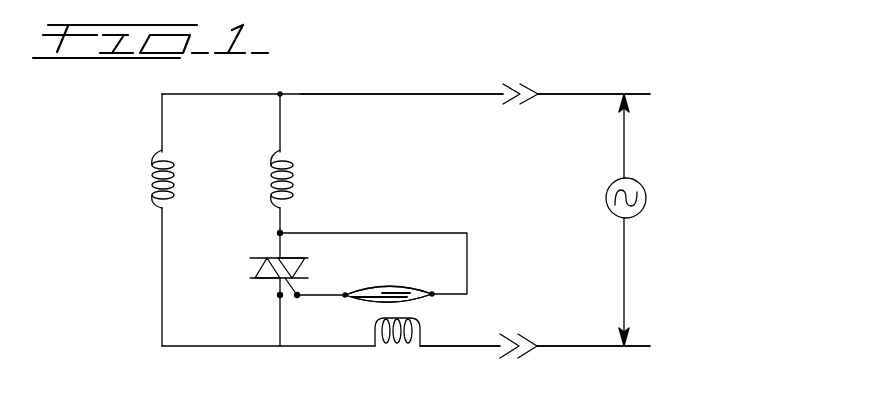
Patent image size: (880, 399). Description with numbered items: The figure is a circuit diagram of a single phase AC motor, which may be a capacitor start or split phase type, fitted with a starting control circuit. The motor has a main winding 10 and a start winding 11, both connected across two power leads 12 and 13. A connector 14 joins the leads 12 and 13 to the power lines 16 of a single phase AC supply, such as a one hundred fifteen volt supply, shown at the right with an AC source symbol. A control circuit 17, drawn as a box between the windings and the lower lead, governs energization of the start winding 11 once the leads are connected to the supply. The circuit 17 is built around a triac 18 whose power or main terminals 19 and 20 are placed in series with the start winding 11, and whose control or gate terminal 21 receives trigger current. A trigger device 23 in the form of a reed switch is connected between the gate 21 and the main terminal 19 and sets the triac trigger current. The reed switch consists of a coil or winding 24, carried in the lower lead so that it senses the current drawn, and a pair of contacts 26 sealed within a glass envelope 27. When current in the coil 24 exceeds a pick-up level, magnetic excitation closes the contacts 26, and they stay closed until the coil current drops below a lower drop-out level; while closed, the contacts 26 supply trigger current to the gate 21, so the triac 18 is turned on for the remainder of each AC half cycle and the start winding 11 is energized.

The main winding 10 is at (155, 185).
The start winding 11 is at (272, 152).
The power lead 12 is at (474, 94).
The power lead 13 is at (477, 345).
The connector 14 is at (525, 88).
The power lines 16 is at (588, 96).
The control circuit 17 is at (375, 219).
The triac 18 is at (246, 273).
The main terminal 19 is at (280, 233).
The main terminal 20 is at (280, 295).
The gate terminal 21 is at (297, 295).
The trigger device 23 is at (420, 301).
The coil 24 is at (388, 346).
The contacts 26 is at (391, 292).
The sealed glass envelope 27 is at (357, 287).